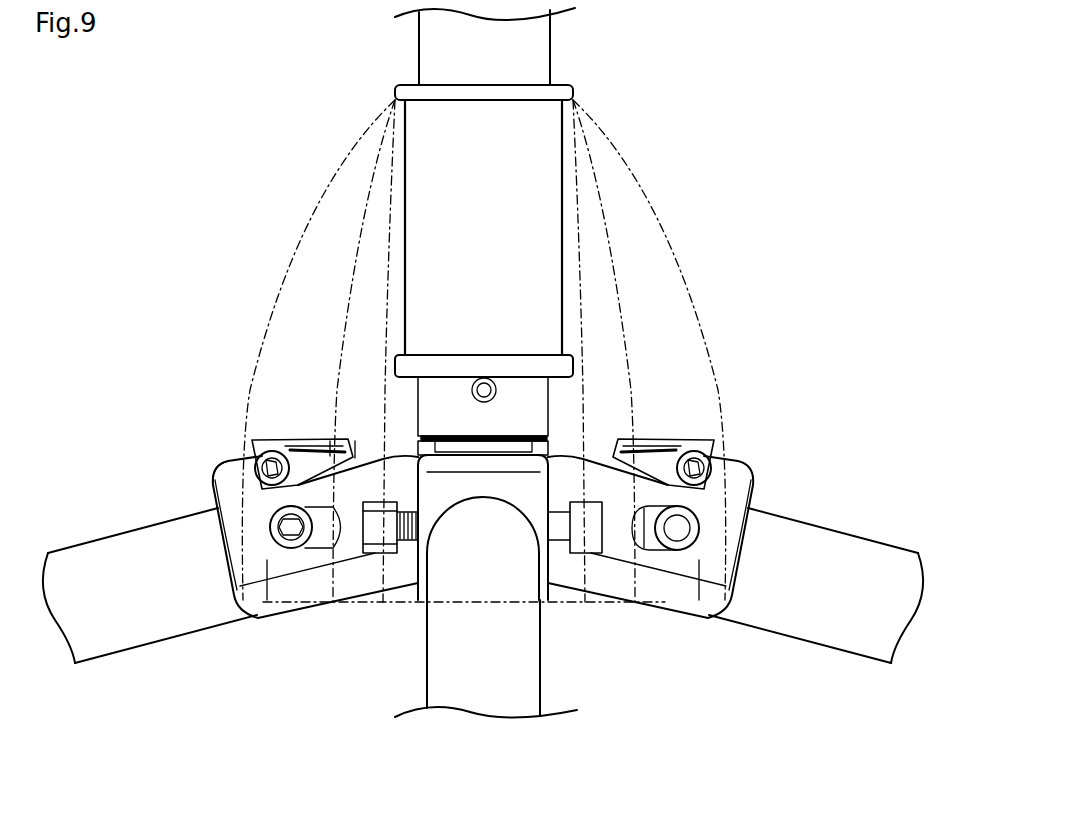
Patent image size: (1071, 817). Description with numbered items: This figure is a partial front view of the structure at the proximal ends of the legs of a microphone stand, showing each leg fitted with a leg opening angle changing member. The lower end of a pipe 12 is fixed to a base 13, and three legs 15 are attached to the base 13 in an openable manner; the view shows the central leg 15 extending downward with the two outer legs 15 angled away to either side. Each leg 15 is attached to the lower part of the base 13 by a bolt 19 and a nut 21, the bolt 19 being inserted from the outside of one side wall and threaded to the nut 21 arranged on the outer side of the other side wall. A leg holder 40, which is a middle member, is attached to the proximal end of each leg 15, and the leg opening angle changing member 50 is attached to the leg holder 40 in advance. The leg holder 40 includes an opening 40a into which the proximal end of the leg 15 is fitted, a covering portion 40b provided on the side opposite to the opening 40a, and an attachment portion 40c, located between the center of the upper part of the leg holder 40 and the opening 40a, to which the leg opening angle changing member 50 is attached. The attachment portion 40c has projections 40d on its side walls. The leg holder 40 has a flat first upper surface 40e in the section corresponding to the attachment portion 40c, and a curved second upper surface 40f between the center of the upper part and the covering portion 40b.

The pipe 12 is at (419, 45).
The base 13 is at (642, 193).
The leg 15 is at (110, 535).
The bolt 19 is at (270, 600).
The nut 21 is at (382, 586).
The leg holder 40 is at (475, 534).
The opening 40a is at (512, 503).
The covering portion 40b is at (400, 466).
The attachment portion 40c is at (230, 482).
The projections 40d is at (302, 422).
The flat first upper surface 40e is at (233, 478).
The curved second upper surface 40f is at (360, 458).
The leg opening angle changing member 50 is at (273, 450).